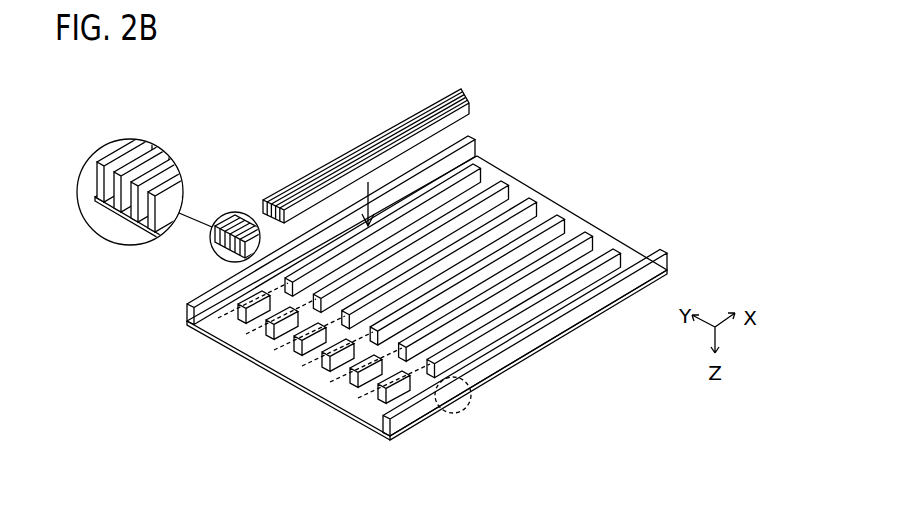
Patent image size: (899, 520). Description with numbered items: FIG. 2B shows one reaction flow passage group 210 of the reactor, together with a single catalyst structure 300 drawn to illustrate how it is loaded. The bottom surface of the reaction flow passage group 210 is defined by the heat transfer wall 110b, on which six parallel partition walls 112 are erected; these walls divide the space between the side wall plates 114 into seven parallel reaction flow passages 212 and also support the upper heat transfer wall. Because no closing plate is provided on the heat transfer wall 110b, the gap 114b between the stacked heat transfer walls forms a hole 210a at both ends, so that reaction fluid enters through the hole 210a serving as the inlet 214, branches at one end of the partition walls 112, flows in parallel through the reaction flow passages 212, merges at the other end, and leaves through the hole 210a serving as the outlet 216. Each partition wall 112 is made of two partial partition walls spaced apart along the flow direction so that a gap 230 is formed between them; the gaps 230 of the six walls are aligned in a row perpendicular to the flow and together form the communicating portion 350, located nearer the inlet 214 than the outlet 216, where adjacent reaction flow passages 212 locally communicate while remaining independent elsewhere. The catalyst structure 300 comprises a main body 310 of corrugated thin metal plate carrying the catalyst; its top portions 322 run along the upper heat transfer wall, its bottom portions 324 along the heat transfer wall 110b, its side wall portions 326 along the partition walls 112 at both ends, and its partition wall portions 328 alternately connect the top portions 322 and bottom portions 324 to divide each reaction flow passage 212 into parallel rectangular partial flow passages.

The reaction flow passage group 210 is at (466, 285).
The heat transfer wall 110b is at (498, 170).
The partition walls 112 is at (456, 277).
The reaction flow passages 212 is at (550, 289).
The side wall plates 114 is at (185, 308).
The gap 114b is at (466, 327).
The hole 210a is at (427, 355).
The inlet 214 is at (288, 380).
The outlet 216 is at (638, 257).
The gap 230 is at (392, 380).
The communicating portion 350 is at (458, 413).
The catalyst structure 300 is at (237, 185).
The main body 310 is at (239, 212).
The top portions 322 is at (106, 197).
The bottom portions 324 is at (117, 212).
The side wall portions 326 is at (104, 213).
The partition wall portions 328 is at (110, 190).